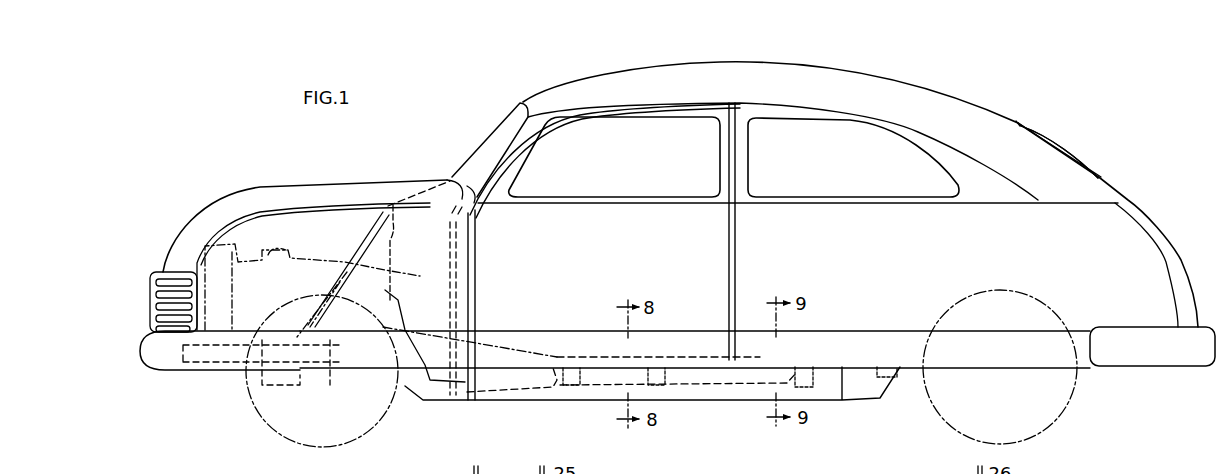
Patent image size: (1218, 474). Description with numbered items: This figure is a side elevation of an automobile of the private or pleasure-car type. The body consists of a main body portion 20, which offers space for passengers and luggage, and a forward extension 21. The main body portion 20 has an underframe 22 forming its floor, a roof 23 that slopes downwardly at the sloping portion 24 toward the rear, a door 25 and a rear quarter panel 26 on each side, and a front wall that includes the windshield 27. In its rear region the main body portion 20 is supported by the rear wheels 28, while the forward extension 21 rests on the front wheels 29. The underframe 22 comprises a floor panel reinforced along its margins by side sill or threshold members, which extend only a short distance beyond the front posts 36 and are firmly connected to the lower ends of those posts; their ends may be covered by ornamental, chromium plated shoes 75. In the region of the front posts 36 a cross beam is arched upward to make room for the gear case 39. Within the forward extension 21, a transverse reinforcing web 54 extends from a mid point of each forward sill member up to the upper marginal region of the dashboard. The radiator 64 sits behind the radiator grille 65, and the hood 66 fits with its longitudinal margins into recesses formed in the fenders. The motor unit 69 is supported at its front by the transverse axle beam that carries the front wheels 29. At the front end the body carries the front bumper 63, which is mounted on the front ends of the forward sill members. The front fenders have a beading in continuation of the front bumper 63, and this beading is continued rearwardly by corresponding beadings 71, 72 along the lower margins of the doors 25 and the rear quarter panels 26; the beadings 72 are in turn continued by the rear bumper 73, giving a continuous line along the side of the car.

The main body portion 20 is at (915, 81).
The forward extension 21 is at (293, 217).
The underframe 22 is at (552, 400).
The roof 23 is at (752, 72).
The downwardly sloping roof portion 24 is at (1095, 188).
The door 25 is at (580, 242).
The rear quarter panel 26 is at (898, 267).
The windshield 27 is at (487, 146).
The rear wheel 28 is at (950, 430).
The front wheel 29 is at (292, 432).
The front post 36 is at (512, 153).
The gear case 39 is at (503, 345).
The transverse reinforcing web 54 is at (378, 222).
The front bumper 63 is at (160, 362).
The radiator 64 is at (228, 245).
The radiator grille 65 is at (157, 300).
The hood 66 is at (205, 218).
The motor unit 69 is at (323, 264).
The door beading 71 is at (548, 337).
The rear quarter panel beading 72 is at (911, 330).
The rear bumper 73 is at (1201, 360).
The shoe 75 is at (440, 405).